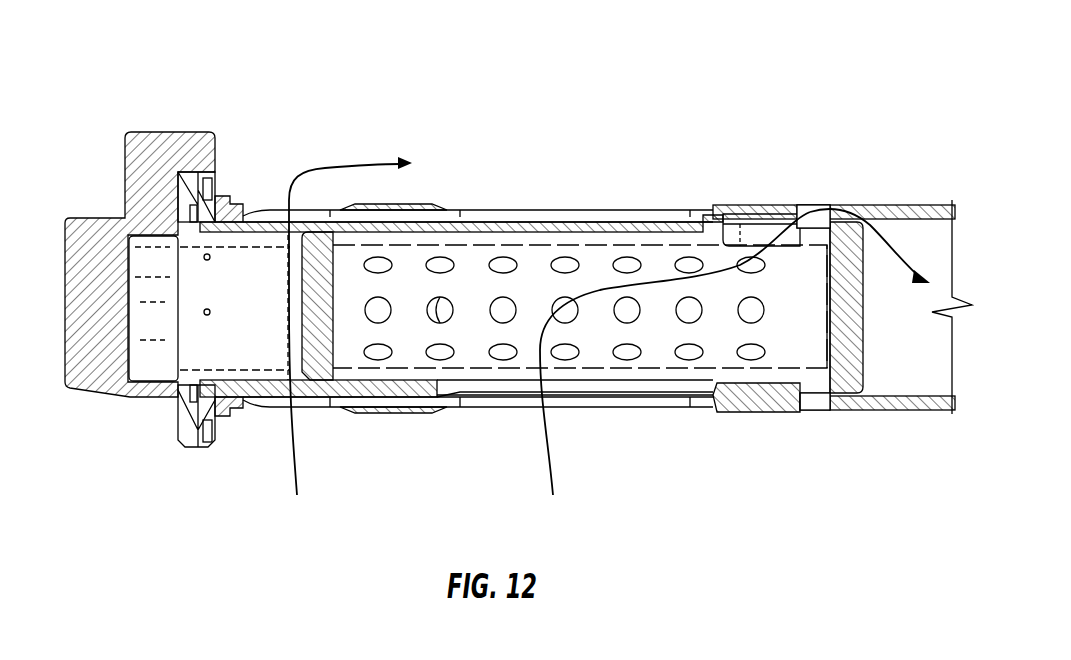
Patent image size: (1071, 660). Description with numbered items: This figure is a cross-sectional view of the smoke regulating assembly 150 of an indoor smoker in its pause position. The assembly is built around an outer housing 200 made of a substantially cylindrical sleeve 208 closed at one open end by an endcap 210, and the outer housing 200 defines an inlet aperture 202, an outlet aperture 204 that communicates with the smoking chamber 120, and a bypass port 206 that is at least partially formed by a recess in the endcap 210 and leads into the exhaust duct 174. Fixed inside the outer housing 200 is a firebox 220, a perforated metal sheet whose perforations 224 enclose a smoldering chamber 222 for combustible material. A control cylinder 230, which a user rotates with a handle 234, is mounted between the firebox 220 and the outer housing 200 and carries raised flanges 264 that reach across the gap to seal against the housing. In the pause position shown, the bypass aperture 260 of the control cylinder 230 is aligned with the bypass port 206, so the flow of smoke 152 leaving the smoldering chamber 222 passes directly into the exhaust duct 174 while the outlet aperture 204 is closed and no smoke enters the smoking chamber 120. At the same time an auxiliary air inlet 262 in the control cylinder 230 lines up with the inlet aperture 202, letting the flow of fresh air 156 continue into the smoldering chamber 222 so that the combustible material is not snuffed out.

The smoke regulating assembly 150 is at (138, 66).
The smoking chamber 120 is at (516, 91).
The handle 234 is at (140, 158).
The control cylinder 230 is at (252, 405).
The flow of fresh air 156 is at (300, 466).
The outer housing 200 is at (420, 200).
The outlet aperture 204 is at (626, 200).
The inlet aperture 202 is at (656, 415).
The auxiliary air inlet 262 is at (488, 400).
The smoldering chamber 222 is at (816, 281).
The perforations 224 is at (565, 258).
The raised flanges 264 is at (717, 216).
The bypass aperture 260 is at (751, 234).
The bypass port 206 is at (820, 200).
The cylindrical sleeve 208 is at (752, 413).
The endcap 210 is at (857, 355).
The firebox 220 is at (808, 350).
The exhaust duct 174 is at (922, 351).
The flow of smoke 152 is at (885, 256).